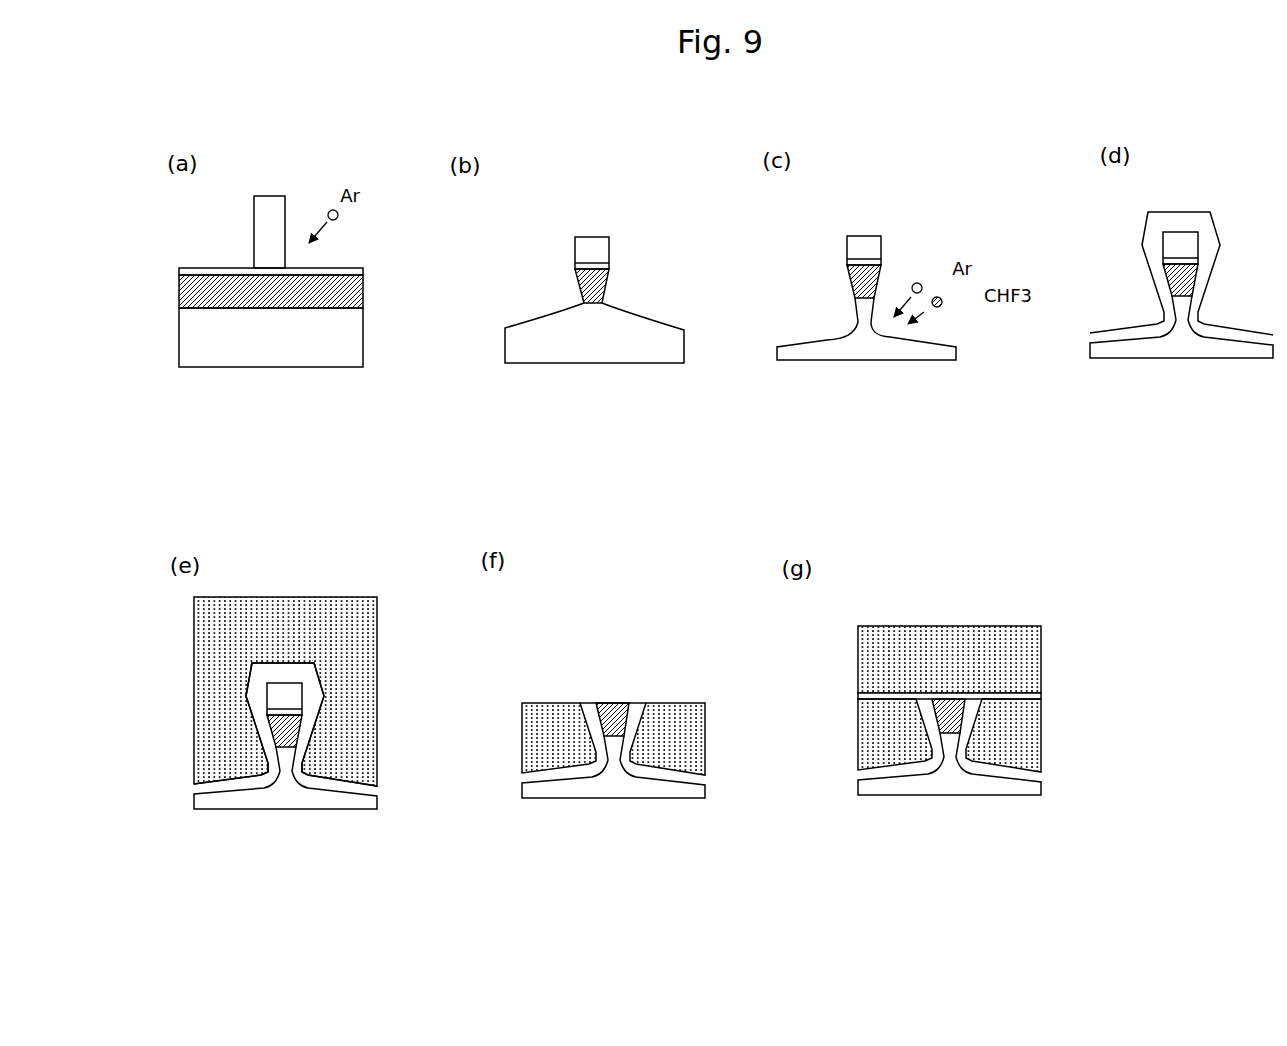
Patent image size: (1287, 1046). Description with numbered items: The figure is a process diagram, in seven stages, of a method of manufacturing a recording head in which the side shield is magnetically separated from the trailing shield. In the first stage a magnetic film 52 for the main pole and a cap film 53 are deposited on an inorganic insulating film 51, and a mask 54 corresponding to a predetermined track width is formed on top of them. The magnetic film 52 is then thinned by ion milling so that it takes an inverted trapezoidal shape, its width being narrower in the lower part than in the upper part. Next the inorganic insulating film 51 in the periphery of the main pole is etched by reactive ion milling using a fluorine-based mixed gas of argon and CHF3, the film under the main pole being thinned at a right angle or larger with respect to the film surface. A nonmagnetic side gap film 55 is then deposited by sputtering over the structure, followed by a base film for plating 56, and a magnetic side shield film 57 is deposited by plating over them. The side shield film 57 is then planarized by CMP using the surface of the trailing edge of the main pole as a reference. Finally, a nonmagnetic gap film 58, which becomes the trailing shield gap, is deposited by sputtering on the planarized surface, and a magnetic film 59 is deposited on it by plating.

The inorganic insulating film 51 is at (287, 350).
The magnetic film 52 is at (363, 295).
The cap film 53 is at (350, 268).
The mask 54 is at (275, 202).
The nonmagnetic side gap film 55 is at (1192, 218).
The base film for plating 56 is at (365, 780).
The magnetic side shield film 57 is at (363, 660).
The nonmagnetic gap film 58 is at (1043, 693).
The magnetic film 59 is at (993, 626).